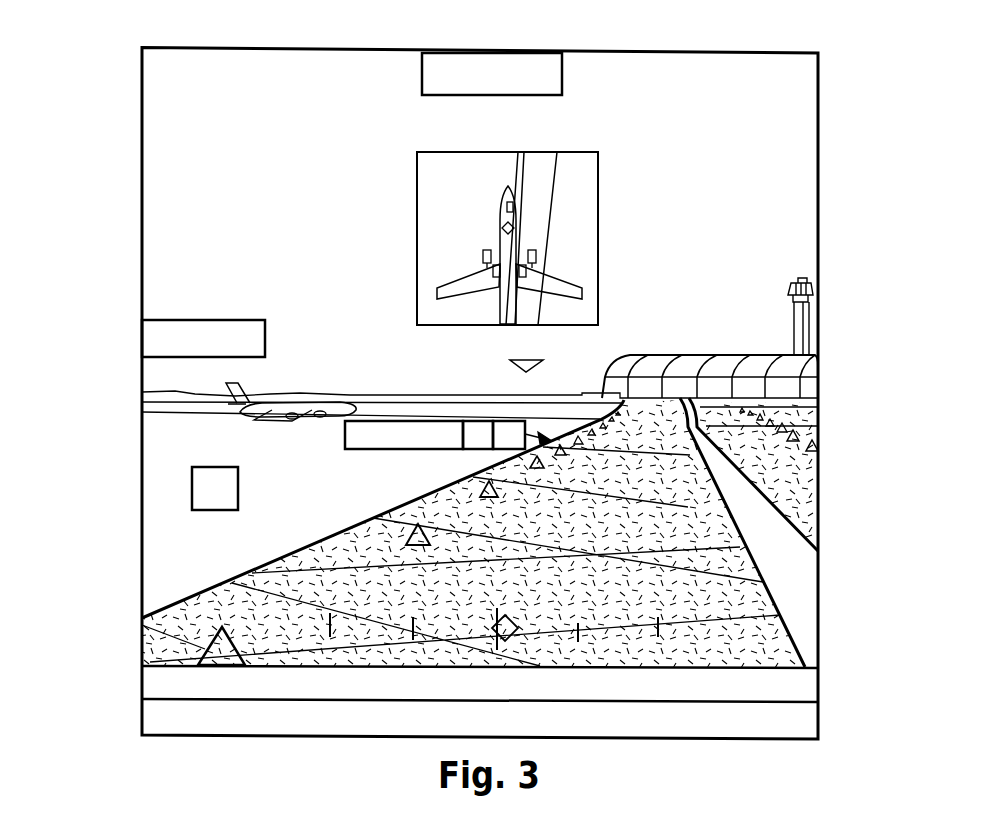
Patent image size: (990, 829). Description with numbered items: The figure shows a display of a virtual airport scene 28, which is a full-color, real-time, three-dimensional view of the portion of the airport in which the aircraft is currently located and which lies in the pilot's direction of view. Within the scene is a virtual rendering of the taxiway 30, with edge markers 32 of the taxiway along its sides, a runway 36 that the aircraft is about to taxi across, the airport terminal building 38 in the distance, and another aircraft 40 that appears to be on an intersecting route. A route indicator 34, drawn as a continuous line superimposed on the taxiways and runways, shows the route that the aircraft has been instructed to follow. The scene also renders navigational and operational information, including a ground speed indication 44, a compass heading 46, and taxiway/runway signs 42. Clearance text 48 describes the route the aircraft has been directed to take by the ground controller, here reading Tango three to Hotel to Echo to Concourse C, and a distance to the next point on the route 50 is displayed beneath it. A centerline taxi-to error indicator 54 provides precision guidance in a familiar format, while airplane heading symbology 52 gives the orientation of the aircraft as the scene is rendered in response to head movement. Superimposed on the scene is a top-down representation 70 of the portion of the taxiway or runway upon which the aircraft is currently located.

The virtual airport scene 28 is at (863, 79).
The taxiway 30 is at (807, 482).
The edge markers 32 is at (148, 616).
The route indicator 34 is at (805, 585).
The runway 36 is at (807, 425).
The airport terminal building 38 is at (805, 388).
The another aircraft 40 is at (250, 412).
The taxiway/runway signs 42 is at (190, 487).
The ground speed indication 44 is at (168, 320).
The compass heading 46 is at (562, 72).
The clearance text 48 is at (142, 680).
The distance to the next point on the route 50 is at (142, 718).
The airplane heading symbology 52 is at (543, 359).
The centerline taxi-to error indicator 54 is at (413, 636).
The top-down representation 70 is at (406, 152).